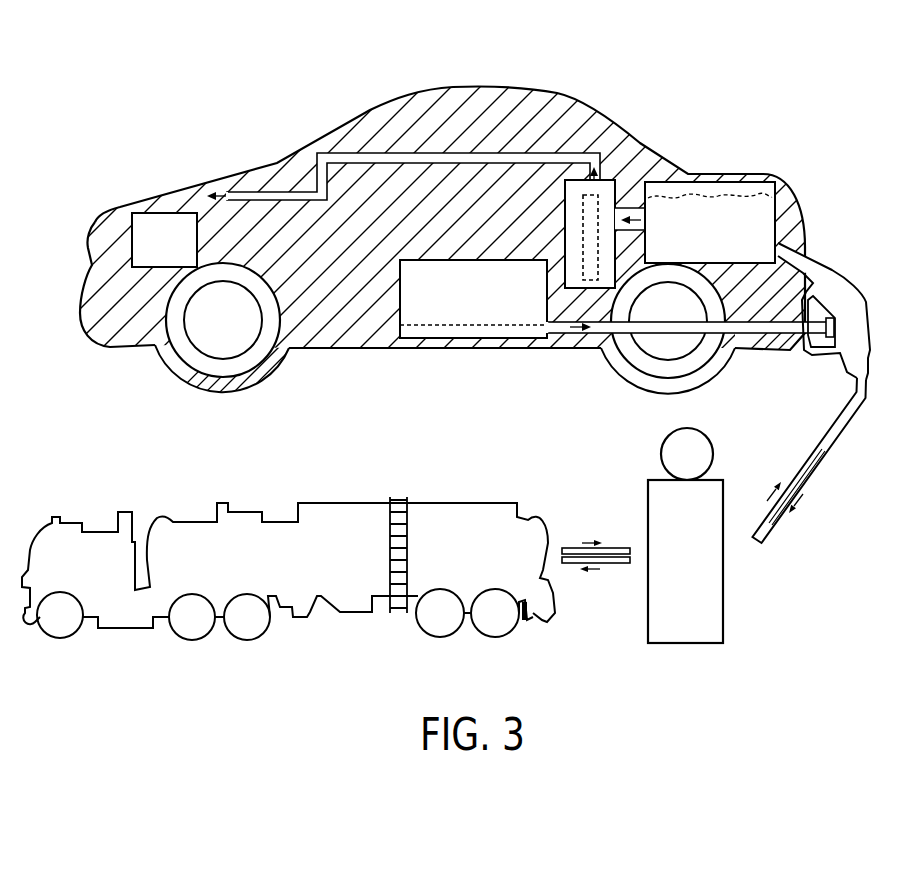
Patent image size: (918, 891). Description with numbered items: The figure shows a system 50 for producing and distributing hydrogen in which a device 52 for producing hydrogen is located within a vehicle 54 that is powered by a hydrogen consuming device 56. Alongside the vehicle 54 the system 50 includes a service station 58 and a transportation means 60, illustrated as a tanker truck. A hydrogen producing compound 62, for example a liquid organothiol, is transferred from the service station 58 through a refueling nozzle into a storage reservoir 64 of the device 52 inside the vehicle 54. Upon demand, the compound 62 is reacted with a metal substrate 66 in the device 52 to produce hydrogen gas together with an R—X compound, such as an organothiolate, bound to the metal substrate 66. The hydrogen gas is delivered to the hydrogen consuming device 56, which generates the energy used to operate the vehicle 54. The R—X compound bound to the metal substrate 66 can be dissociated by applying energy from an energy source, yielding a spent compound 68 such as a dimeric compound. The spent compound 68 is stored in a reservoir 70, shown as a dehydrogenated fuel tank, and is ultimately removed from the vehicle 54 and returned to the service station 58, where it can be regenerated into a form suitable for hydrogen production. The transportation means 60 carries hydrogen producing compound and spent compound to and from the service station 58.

The system 50 is at (234, 52).
The device 52 is at (612, 178).
The vehicle 54 is at (392, 97).
The hydrogen consuming device 56 is at (181, 253).
The service station 58 is at (707, 610).
The transportation means 60 is at (181, 522).
The hydrogen producing compound 62 is at (758, 237).
The storage reservoir 64 is at (741, 182).
The metal substrate 66 is at (598, 232).
The spent compound 68 is at (440, 325).
The reservoir 70 is at (525, 338).